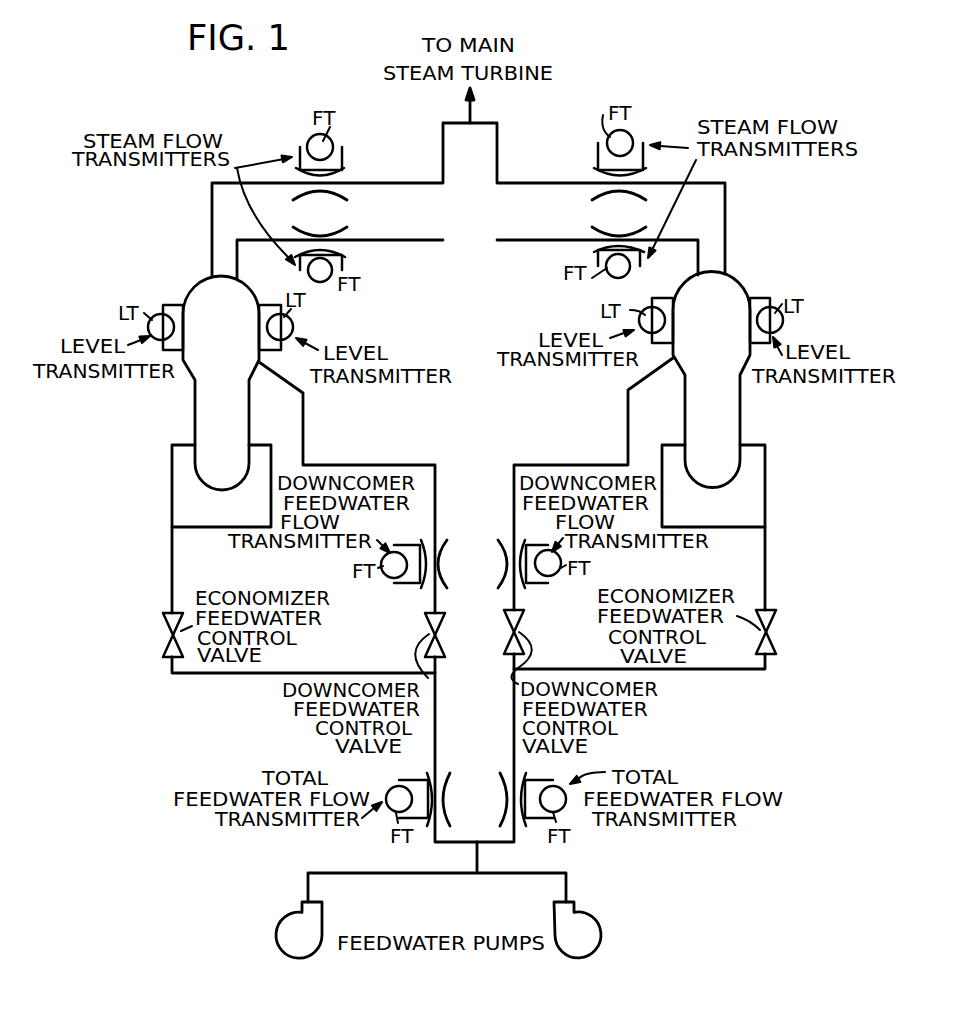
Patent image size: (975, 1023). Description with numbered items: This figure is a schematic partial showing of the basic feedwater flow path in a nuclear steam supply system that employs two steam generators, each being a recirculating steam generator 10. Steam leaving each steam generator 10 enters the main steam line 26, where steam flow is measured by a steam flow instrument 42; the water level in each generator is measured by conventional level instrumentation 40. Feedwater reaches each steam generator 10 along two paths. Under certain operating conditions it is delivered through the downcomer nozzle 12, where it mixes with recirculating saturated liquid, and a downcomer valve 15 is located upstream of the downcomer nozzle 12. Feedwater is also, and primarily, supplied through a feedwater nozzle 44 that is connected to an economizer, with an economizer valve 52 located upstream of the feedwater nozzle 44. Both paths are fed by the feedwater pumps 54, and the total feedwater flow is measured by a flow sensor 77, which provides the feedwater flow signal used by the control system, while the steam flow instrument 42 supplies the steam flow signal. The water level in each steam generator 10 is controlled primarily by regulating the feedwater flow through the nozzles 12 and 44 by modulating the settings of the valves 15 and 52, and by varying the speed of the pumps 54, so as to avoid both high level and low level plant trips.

The steam generator 10 is at (177, 277).
The downcomer nozzle 12 is at (257, 370).
The downcomer valve 15 is at (441, 636).
The main steam line 26 is at (380, 183).
The water level measurement instrumentation 40 is at (293, 333).
The steam flow instrument 42 is at (303, 140).
The feedwater nozzle 44 is at (193, 440).
The economizer valve 52 is at (167, 627).
The pumps 54 is at (270, 935).
The flow sensor 77 is at (359, 813).